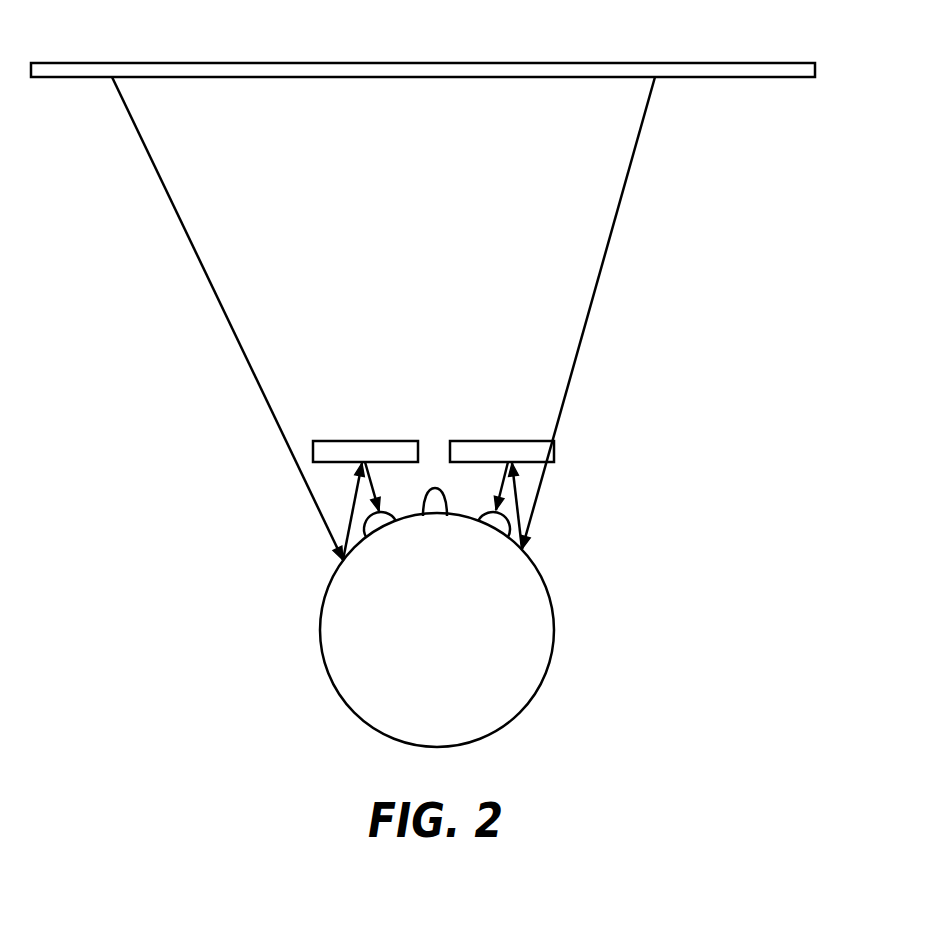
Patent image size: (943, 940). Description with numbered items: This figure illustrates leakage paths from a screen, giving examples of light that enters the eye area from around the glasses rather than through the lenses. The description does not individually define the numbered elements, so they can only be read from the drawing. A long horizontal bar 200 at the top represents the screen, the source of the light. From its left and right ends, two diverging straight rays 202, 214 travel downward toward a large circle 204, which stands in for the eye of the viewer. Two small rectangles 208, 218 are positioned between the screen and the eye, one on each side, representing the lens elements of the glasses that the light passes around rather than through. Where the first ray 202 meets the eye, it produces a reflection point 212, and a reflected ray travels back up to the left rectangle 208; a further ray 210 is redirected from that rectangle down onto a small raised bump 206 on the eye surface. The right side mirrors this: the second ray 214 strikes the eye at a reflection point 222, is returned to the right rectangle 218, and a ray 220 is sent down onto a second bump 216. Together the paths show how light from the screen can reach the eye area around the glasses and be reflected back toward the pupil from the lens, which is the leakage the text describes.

The light source / illumination panel 200 is at (205, 63).
The first light ray 202 is at (137, 131).
The spherical object 204 is at (557, 637).
The first surface bump 206 is at (367, 526).
The first sensor 208 is at (313, 455).
The first reflected ray to bump 210 is at (372, 497).
The first reflection point 212 is at (343, 545).
The second light ray 214 is at (640, 130).
The second surface bump 216 is at (518, 522).
The second sensor 218 is at (554, 452).
The second reflected ray to bump 220 is at (505, 495).
The second reflection point 222 is at (530, 545).